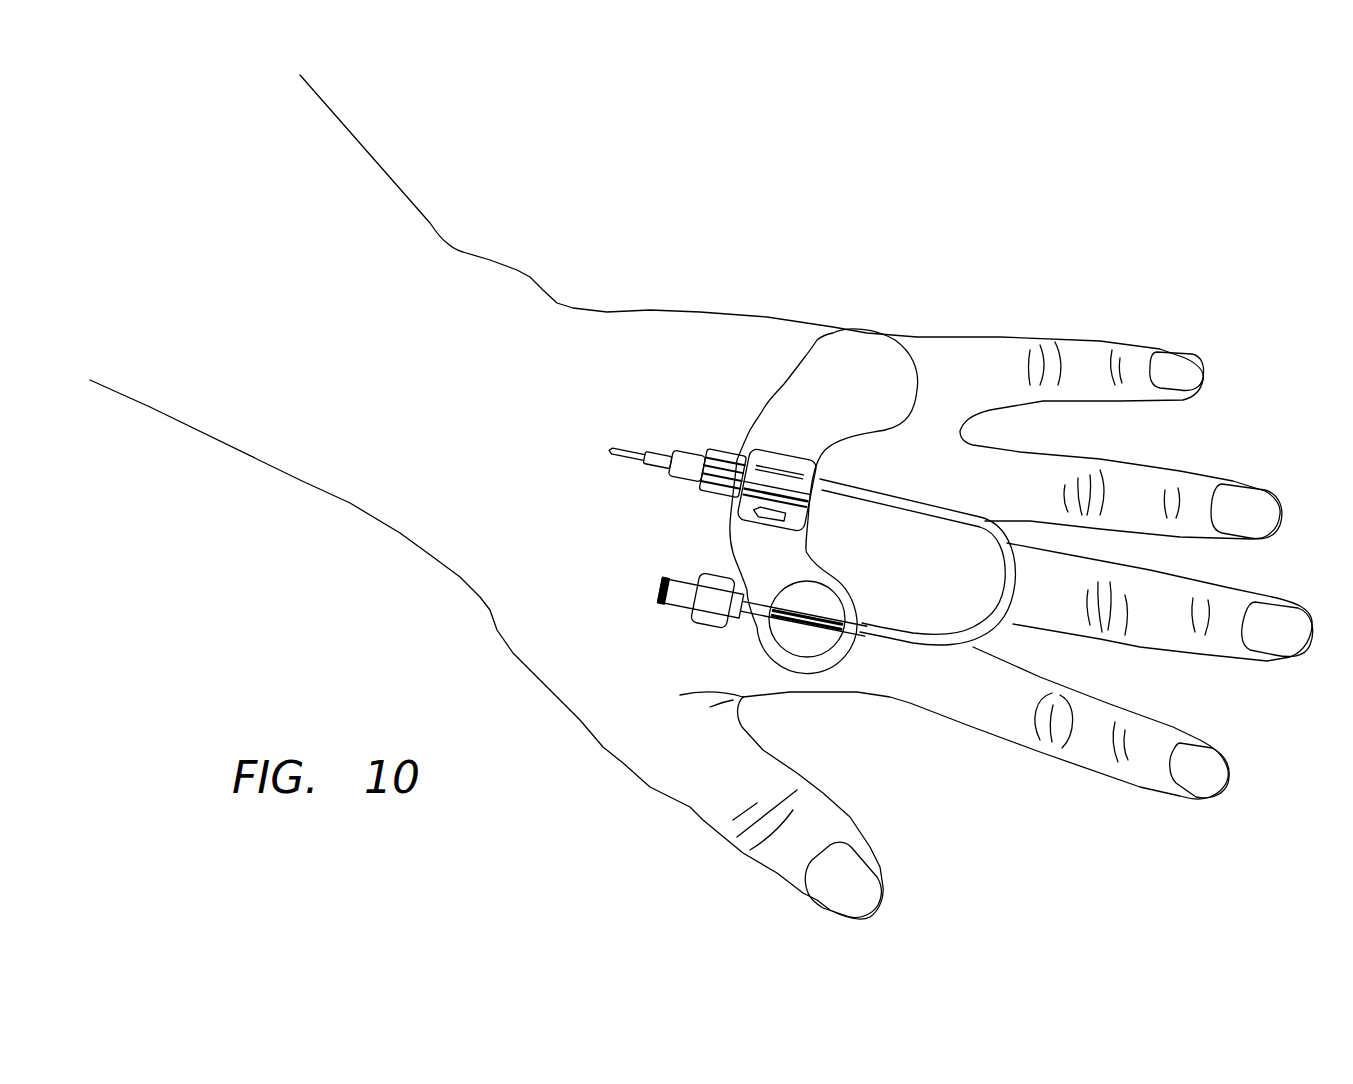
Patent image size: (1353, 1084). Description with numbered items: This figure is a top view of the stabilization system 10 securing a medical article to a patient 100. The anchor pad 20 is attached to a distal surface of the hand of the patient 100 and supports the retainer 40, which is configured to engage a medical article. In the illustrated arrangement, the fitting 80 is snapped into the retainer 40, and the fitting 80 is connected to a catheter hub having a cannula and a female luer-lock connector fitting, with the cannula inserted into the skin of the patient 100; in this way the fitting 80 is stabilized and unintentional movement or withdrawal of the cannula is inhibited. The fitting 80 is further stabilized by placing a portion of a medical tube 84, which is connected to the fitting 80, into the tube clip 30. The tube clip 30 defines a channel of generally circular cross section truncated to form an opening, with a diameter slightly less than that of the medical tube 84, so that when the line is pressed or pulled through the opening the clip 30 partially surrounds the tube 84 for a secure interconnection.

The patient 100 is at (397, 262).
The stabilization system 10 is at (729, 386).
The anchor pad 20 is at (873, 365).
The tube clip 30 is at (803, 640).
The retainer 40 is at (745, 507).
The fitting 80 is at (822, 468).
The medical tube 84 is at (880, 640).